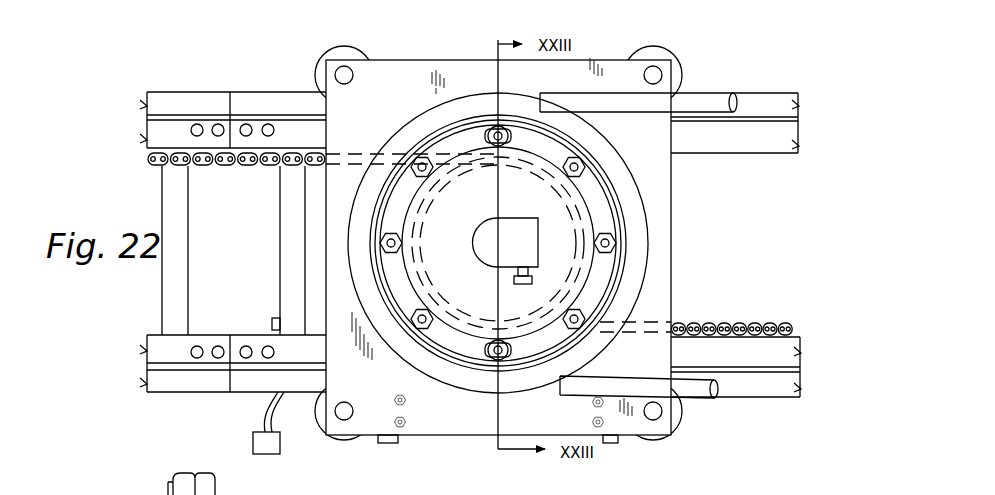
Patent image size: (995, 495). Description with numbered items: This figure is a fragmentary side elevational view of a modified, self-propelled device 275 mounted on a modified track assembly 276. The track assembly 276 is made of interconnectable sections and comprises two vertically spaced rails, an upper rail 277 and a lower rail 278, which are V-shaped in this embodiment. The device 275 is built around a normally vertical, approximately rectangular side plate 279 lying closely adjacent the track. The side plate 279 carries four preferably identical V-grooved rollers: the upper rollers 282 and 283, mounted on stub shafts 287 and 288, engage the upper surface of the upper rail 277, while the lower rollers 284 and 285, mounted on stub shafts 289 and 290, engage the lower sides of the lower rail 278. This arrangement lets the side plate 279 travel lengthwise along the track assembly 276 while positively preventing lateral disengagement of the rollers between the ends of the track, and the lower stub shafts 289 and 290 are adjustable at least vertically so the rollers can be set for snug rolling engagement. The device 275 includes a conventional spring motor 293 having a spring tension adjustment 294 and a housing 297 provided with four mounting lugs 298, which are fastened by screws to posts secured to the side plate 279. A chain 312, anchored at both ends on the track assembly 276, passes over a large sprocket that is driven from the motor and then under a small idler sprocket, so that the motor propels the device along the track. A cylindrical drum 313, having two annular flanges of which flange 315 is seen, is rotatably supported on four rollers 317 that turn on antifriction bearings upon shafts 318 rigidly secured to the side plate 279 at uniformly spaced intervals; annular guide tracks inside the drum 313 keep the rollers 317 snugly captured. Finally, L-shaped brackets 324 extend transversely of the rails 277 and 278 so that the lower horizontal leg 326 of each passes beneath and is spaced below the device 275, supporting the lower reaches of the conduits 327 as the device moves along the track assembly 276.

The self-propelled device 275 is at (702, 64).
The track assembly 276 is at (213, 86).
The upper rail 277 is at (767, 97).
The lower rail 278 is at (792, 394).
The side plate 279 is at (432, 422).
The upper roller 282 is at (338, 52).
The upper roller 283 is at (656, 54).
The lower roller 284 is at (345, 441).
The lower roller 285 is at (688, 432).
The stub shaft 287 is at (353, 78).
The stub shaft 288 is at (644, 75).
The stub shaft 289 is at (346, 410).
The stub shaft 290 is at (655, 421).
The spring motor 293 is at (594, 206).
The spring tension adjustment 294 is at (471, 233).
The housing 297 is at (498, 243).
The mounting lug 298 is at (581, 174).
The chain 312 is at (723, 323).
The cylindrical drum 313 is at (652, 260).
The annular flange 315 is at (447, 373).
The roller 317 is at (612, 252).
The shaft 318 is at (612, 243).
The L-shaped bracket 324 is at (268, 404).
The lower horizontal leg 326 is at (257, 456).
The conduit 327 is at (606, 385).